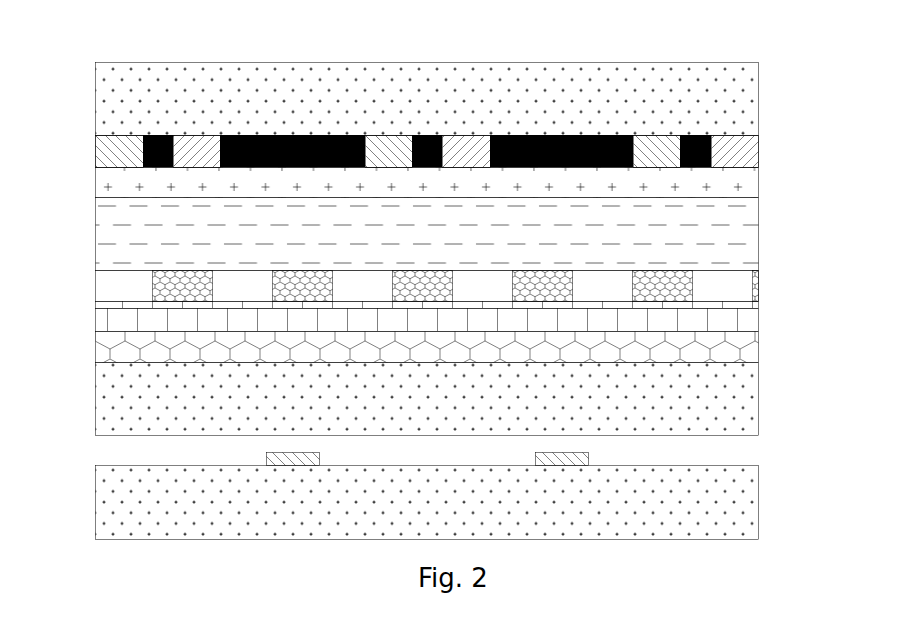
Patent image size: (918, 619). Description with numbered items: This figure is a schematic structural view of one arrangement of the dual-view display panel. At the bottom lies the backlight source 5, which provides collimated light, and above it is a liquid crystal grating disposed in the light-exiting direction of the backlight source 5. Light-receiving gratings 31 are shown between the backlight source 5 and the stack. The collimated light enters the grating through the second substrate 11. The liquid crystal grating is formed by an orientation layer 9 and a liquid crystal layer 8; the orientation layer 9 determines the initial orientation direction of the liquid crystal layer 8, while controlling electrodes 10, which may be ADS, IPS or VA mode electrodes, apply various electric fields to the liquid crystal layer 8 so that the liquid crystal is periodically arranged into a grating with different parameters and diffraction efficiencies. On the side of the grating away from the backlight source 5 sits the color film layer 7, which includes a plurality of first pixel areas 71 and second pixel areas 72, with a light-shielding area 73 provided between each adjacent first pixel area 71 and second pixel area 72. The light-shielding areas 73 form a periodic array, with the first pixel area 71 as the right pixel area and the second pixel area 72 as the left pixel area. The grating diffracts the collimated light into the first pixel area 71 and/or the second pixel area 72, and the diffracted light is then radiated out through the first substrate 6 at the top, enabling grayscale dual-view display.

The backlight source 5 is at (738, 513).
The first substrate 6 is at (740, 110).
The color film layer 7 is at (813, 155).
The first pixel area 71 is at (382, 147).
The second pixel area 72 is at (200, 150).
The light-shielding area 73 is at (317, 135).
The liquid crystal layer 8 is at (118, 238).
The orientation layer 9 is at (117, 185).
The controlling electrode 10 is at (757, 270).
The second substrate 11 is at (117, 397).
The light-receiving grating 31 is at (303, 460).